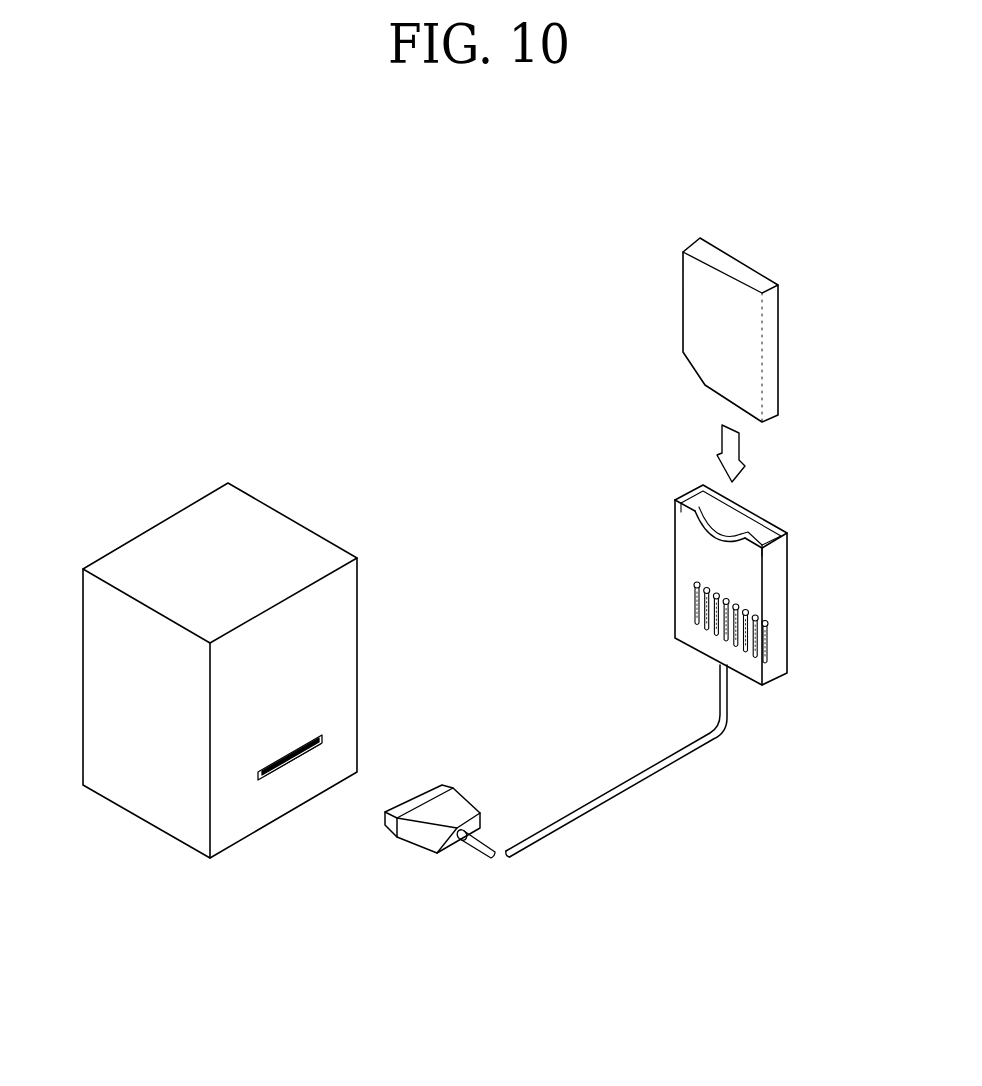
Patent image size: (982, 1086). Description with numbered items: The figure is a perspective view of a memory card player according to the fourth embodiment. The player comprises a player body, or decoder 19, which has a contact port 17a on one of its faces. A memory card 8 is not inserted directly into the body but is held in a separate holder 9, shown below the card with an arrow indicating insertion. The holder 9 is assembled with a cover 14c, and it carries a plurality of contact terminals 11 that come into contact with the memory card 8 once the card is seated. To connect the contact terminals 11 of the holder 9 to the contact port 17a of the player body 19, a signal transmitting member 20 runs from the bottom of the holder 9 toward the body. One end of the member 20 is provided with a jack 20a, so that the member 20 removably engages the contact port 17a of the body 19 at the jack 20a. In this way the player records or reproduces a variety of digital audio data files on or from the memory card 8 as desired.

The memory card 8 is at (775, 338).
The holder 9 is at (712, 585).
The contact terminals 11 is at (700, 610).
The cover 14c is at (680, 548).
The contact port 17a is at (283, 768).
The player body 19 is at (347, 715).
The signal transmitting member 20 is at (607, 797).
The jack 20a is at (423, 842).